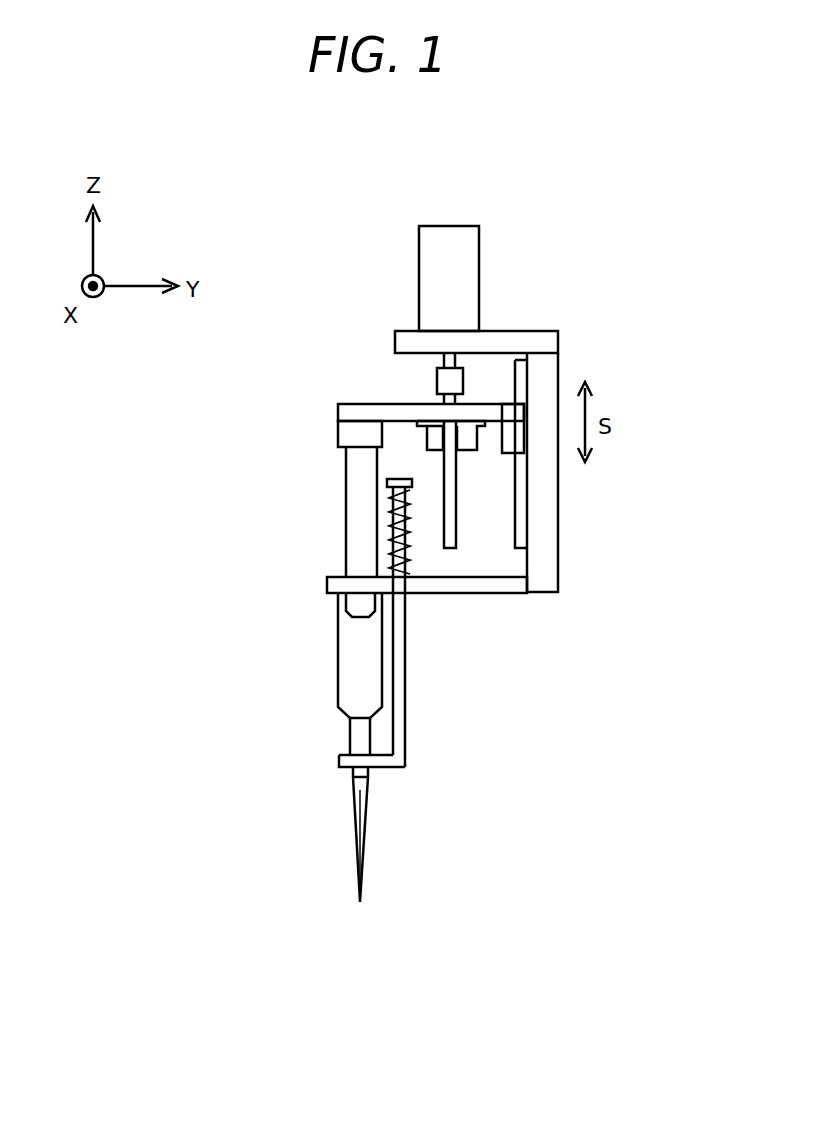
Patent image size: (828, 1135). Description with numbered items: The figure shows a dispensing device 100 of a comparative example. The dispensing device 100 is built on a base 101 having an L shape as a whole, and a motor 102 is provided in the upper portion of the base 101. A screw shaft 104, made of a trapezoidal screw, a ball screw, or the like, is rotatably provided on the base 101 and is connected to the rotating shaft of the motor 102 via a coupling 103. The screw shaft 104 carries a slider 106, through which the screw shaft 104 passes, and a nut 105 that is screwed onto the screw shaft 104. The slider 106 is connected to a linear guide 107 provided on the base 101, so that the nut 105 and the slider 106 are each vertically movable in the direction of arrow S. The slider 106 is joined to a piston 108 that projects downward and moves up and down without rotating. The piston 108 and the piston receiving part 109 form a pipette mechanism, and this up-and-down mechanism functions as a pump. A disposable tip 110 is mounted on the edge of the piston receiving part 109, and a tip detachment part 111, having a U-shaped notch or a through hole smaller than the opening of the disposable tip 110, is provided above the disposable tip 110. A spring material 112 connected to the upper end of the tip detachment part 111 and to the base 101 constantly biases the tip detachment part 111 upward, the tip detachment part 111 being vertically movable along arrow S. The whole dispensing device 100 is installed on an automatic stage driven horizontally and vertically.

The dispensing device 100 is at (598, 221).
The base 101 is at (538, 340).
The motor 102 is at (458, 262).
The coupling 103 is at (446, 380).
The screw shaft 104 is at (450, 537).
The nut 105 is at (463, 438).
The slider 106 is at (512, 442).
The linear guide 107 is at (523, 510).
The piston 108 is at (355, 507).
The piston receiving part 109 is at (338, 617).
The disposable tip 110 is at (357, 795).
The tip detachment part 111 is at (407, 758).
The spring material 112 is at (408, 543).